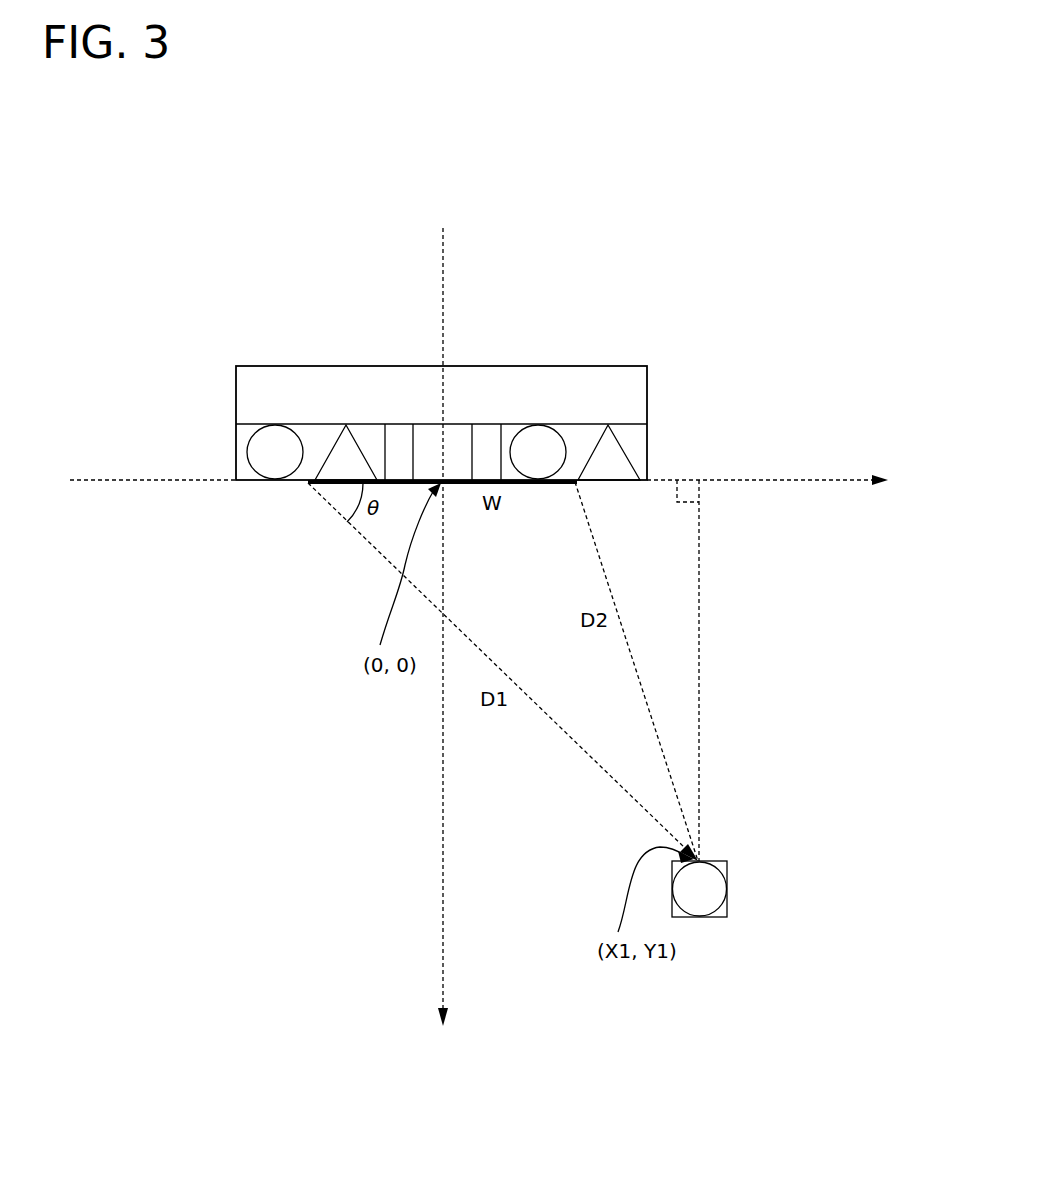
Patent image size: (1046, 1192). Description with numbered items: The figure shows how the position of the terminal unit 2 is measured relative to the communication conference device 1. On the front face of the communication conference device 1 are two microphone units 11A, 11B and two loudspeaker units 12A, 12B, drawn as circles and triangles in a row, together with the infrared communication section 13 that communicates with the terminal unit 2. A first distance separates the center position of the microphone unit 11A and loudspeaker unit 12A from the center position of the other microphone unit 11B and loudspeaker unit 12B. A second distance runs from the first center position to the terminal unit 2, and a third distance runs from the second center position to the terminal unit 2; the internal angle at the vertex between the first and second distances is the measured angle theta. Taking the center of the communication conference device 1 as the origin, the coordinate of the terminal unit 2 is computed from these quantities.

The communication conference device 1 is at (639, 367).
The terminal unit 2 is at (727, 887).
The microphone unit 11A is at (248, 448).
The microphone unit 11B is at (563, 447).
The loudspeaker unit 12A is at (320, 446).
The loudspeaker unit 12B is at (624, 452).
The infrared communication section 13 is at (396, 484).